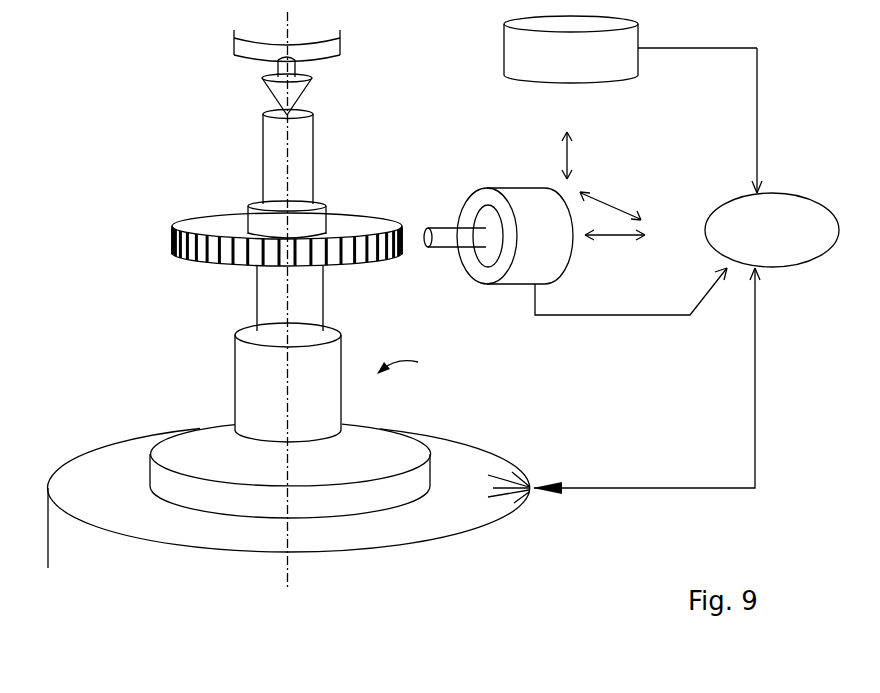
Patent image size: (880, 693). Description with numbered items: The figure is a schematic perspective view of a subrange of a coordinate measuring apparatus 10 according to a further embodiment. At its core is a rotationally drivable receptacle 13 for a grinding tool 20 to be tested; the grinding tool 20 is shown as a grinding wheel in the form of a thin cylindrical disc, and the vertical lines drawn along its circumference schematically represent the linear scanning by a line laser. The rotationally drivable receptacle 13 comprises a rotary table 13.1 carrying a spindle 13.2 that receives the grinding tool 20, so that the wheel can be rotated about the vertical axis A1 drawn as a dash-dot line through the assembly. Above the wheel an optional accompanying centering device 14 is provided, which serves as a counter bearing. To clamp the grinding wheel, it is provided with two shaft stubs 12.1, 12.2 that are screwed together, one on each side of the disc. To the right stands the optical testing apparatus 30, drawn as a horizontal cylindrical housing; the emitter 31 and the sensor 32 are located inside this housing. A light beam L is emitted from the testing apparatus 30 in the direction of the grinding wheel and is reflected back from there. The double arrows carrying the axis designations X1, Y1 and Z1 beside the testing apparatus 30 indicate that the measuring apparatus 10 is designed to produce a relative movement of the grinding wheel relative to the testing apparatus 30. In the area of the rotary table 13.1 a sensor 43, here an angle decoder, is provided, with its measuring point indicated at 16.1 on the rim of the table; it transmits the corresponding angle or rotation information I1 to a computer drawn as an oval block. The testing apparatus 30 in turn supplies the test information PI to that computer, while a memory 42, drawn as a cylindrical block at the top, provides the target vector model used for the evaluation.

The measuring apparatus 10 is at (85, 31).
The centering device 14 is at (262, 82).
The shaft stub 12.1 is at (272, 163).
The grinding tool 20 is at (205, 225).
The shaft stub 12.2 is at (262, 323).
The spindle 13.2 is at (248, 390).
The rotary table 13.1 is at (193, 450).
The rotationally drivable receptacle 13 is at (413, 364).
The emitter 31 is at (428, 222).
The optical testing apparatus 30 is at (437, 223).
The light beam L is at (403, 240).
The sensor 32 is at (486, 252).
The memory 42 is at (633, 104).
The axis designation Z1 is at (572, 143).
The axis designation X1 is at (610, 200).
The axis designation Y1 is at (617, 241).
The test information PI is at (631, 308).
The rotation information I1 is at (658, 381).
The sensor 43 is at (538, 469).
The nozzle / target point 16.1 is at (548, 492).
The rotation axis A1 is at (282, 314).